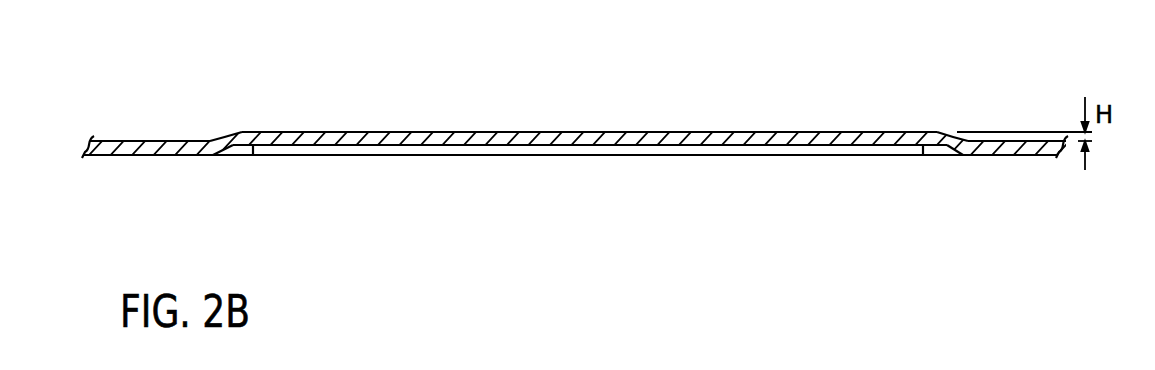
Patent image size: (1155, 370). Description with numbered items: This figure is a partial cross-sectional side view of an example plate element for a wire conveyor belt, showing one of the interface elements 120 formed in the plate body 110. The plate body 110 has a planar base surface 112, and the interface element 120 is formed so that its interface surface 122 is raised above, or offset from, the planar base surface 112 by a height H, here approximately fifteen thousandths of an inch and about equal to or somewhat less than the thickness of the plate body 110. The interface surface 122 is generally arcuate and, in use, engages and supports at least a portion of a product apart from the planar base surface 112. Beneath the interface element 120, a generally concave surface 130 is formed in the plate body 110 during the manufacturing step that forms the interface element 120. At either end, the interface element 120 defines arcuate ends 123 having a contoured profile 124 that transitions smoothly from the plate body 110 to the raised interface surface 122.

The plate body 110 is at (148, 140).
The planar base surface 112 is at (177, 140).
The interface element 120 is at (437, 137).
The interface surface 122 is at (520, 132).
The arcuate ends 123 is at (228, 136).
The contoured profile 124 is at (235, 156).
The concave surface 130 is at (589, 146).